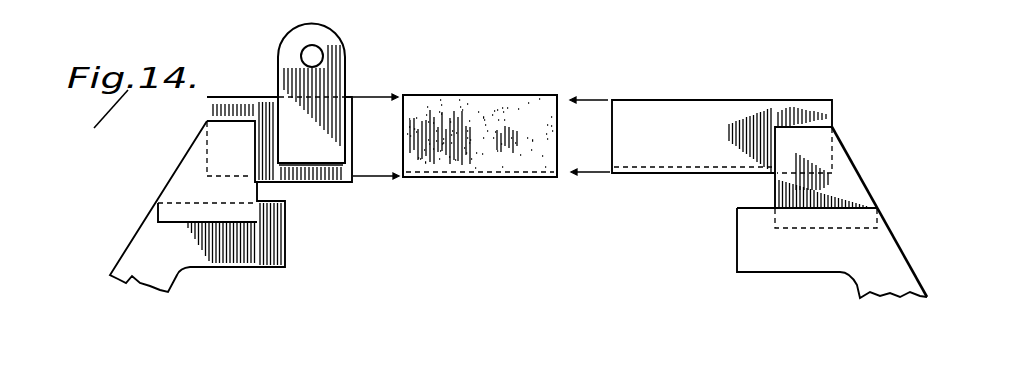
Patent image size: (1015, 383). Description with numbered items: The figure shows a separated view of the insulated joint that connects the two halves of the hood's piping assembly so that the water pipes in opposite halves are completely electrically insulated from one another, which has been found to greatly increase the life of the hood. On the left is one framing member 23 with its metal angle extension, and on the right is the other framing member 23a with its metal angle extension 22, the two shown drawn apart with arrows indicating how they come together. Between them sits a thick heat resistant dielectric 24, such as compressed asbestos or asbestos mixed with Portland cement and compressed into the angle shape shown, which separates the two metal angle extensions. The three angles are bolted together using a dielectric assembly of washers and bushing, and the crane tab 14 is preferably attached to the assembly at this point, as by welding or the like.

The crane tab 14 is at (692, 87).
The metal angle extension 22 is at (833, 110).
The framing member 23 is at (133, 237).
The framing member 23a is at (900, 245).
The heat resistant dielectric 24 is at (530, 178).